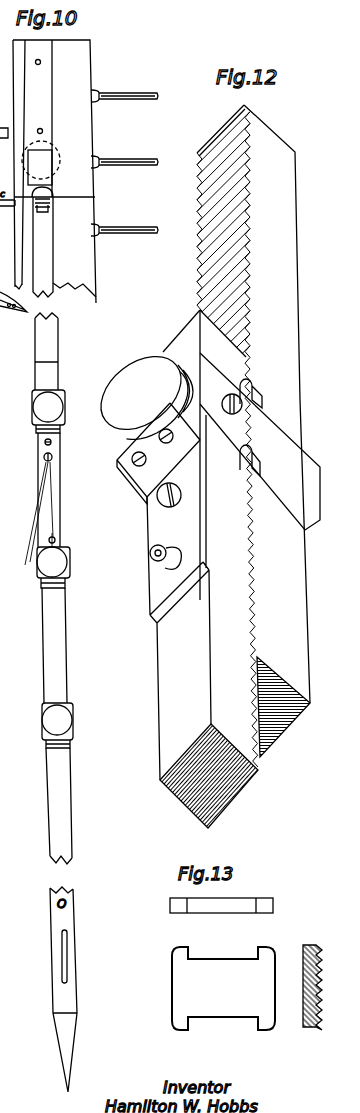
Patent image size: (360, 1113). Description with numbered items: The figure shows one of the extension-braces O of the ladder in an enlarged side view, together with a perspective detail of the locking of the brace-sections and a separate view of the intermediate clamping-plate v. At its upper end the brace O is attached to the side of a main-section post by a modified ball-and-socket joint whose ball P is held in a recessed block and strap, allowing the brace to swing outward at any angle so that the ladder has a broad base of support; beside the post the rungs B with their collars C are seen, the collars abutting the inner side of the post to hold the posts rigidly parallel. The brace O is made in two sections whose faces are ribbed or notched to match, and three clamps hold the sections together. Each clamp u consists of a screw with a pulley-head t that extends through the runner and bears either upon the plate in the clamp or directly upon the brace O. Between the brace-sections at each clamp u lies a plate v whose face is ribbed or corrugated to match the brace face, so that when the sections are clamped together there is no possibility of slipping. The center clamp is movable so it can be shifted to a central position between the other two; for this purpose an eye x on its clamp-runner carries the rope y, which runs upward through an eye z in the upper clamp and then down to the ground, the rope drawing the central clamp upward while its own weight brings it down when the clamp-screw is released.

In FIG. 10, the bracket a is at (4, 99).
In FIG. 10, the rungs B is at (124, 154).
In FIG. 10, the collars C is at (102, 146).
In FIG. 10, the ball P is at (41, 176).
In FIG. 10, the extension-braces O is at (42, 263).
In FIG. 12, the extension-braces O is at (228, 466).
In FIG. 10, the pulley-heads t is at (52, 569).
In FIG. 12, the pulley-heads t is at (143, 377).
In FIG. 12, the clamp u is at (260, 441).
In FIG. 10, the eye z is at (44, 458).
In FIG. 12, the eye z is at (156, 558).
In FIG. 10, the rope y is at (30, 513).
In FIG. 10, the eye x is at (57, 540).
In FIG. 13, the plate v is at (246, 957).